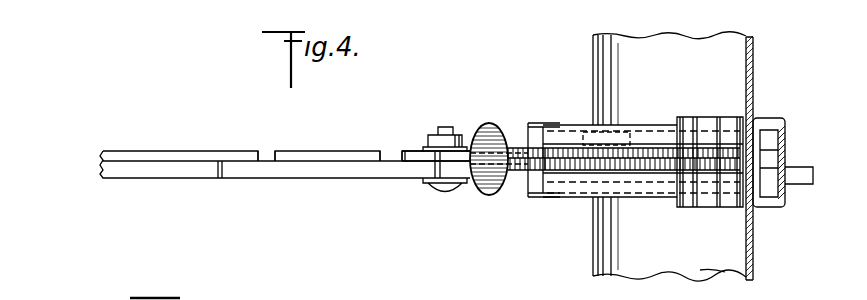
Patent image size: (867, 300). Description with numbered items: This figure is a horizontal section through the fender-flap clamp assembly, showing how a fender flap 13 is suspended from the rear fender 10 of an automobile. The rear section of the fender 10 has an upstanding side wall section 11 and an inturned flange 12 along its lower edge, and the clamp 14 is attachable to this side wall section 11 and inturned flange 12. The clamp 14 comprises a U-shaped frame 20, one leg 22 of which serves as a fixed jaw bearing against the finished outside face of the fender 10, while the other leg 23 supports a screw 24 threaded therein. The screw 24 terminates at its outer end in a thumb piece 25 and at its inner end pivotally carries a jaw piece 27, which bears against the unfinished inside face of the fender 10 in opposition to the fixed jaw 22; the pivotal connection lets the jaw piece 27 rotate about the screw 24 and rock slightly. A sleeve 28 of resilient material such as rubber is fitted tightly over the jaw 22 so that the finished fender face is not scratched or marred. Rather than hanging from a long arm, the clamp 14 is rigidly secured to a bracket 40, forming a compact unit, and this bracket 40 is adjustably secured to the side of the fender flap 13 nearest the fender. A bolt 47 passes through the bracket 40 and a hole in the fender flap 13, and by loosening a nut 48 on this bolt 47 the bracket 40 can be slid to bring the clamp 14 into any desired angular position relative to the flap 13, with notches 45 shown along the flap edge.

The rear fender 10 is at (717, 271).
The side wall section 11 is at (764, 69).
The inturned flange 12 is at (697, 262).
The fender flap 13 is at (187, 178).
The clamp 14 is at (572, 205).
The U-shaped frame 20 is at (633, 125).
The leg 22 is at (765, 153).
The leg 23 is at (523, 183).
The screw 24 is at (555, 155).
The thumb piece 25 is at (497, 130).
The jaw piece 27 is at (710, 110).
The sleeve 28 is at (783, 128).
The bracket 40 is at (412, 165).
The notches 45 is at (264, 152).
The bolt 47 is at (450, 196).
The nut 48 is at (425, 140).